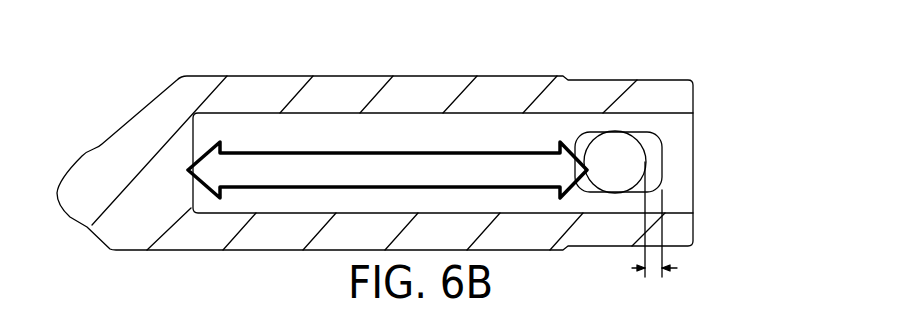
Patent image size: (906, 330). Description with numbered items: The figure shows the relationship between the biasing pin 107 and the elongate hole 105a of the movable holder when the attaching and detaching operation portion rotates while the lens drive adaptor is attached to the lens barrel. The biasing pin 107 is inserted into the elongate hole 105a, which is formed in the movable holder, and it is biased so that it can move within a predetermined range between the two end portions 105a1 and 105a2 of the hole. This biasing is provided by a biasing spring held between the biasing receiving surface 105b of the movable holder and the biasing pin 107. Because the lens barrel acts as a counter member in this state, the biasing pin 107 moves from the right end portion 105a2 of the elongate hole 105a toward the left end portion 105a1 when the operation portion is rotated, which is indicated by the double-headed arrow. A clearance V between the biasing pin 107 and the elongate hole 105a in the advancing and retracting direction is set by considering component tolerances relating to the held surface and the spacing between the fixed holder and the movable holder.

The biasing receiving surface 105b is at (203, 150).
The elongate hole 105a is at (653, 163).
The end portion 105a1 is at (645, 178).
The end portion 105a2 is at (662, 153).
The biasing pin 107 is at (618, 150).